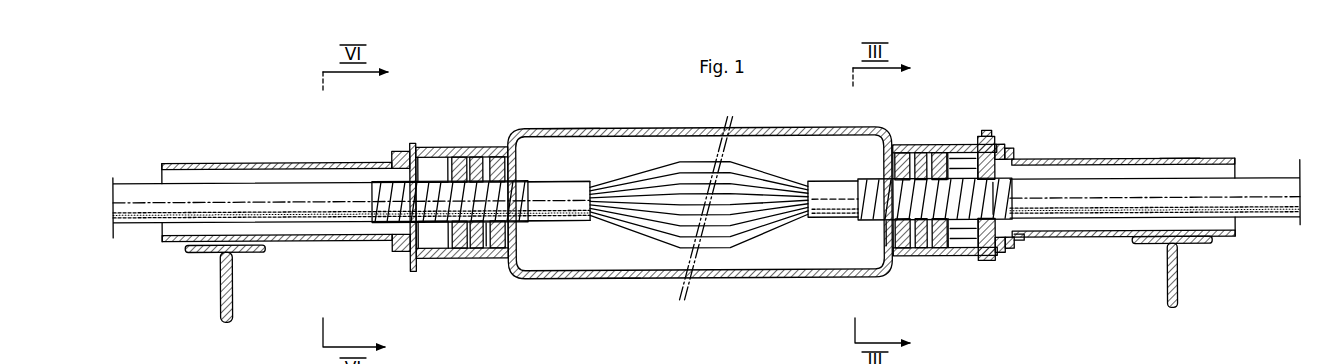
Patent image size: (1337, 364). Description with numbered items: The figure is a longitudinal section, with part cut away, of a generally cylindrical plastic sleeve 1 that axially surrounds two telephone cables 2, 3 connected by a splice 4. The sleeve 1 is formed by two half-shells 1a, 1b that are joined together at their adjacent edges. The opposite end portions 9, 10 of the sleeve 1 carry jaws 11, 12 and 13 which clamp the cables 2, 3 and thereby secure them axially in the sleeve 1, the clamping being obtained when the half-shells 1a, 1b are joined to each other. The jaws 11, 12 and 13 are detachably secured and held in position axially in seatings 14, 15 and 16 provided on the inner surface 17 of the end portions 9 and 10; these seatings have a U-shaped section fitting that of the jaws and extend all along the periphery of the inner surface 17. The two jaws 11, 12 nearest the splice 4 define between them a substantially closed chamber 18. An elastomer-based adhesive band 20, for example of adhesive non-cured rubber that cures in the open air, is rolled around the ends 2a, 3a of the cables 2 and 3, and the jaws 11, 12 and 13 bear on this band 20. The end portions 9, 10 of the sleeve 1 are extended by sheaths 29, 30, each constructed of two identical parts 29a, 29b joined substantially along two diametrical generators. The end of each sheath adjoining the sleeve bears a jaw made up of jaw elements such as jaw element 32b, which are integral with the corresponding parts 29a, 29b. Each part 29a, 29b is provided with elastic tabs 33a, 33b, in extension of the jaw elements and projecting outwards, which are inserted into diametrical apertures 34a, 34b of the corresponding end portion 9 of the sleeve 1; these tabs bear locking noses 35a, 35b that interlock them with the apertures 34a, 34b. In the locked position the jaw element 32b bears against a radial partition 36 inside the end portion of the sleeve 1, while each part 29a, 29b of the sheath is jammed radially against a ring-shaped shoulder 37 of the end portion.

The sleeve 1 is at (653, 127).
The half-shell 1a is at (612, 273).
The half-shell 1b is at (565, 131).
The telephone cable 2 is at (1257, 196).
The cable end 2a is at (828, 197).
The telephone cable 3 is at (330, 203).
The cable end 3a is at (560, 201).
The splice 4 is at (750, 216).
The end portion 9 is at (953, 151).
The end portion 10 is at (432, 152).
The jaw 11 is at (498, 158).
The jaw 12 is at (474, 158).
The jaw 13 is at (451, 158).
The seating 14 is at (906, 258).
The seating 15 is at (928, 258).
The seating 16 is at (946, 256).
The inner surface 17 is at (966, 258).
The chamber 18 is at (489, 228).
The adhesive band 20 is at (514, 191).
The sheath 29 is at (1122, 160).
The sheath part 29a is at (1214, 246).
The sheath part 29b is at (1173, 161).
The sheath 30 is at (256, 162).
The jaw element 32b is at (996, 197).
The elastic tab 33a is at (998, 254).
The elastic tab 33b is at (998, 146).
The diametrical aperture 34a is at (1010, 250).
The diametrical aperture 34b is at (1008, 152).
The locking nose 35a is at (986, 258).
The locking nose 35b is at (987, 146).
The radial partition 36 is at (972, 148).
The ring-shaped shoulder 37 is at (1016, 240).